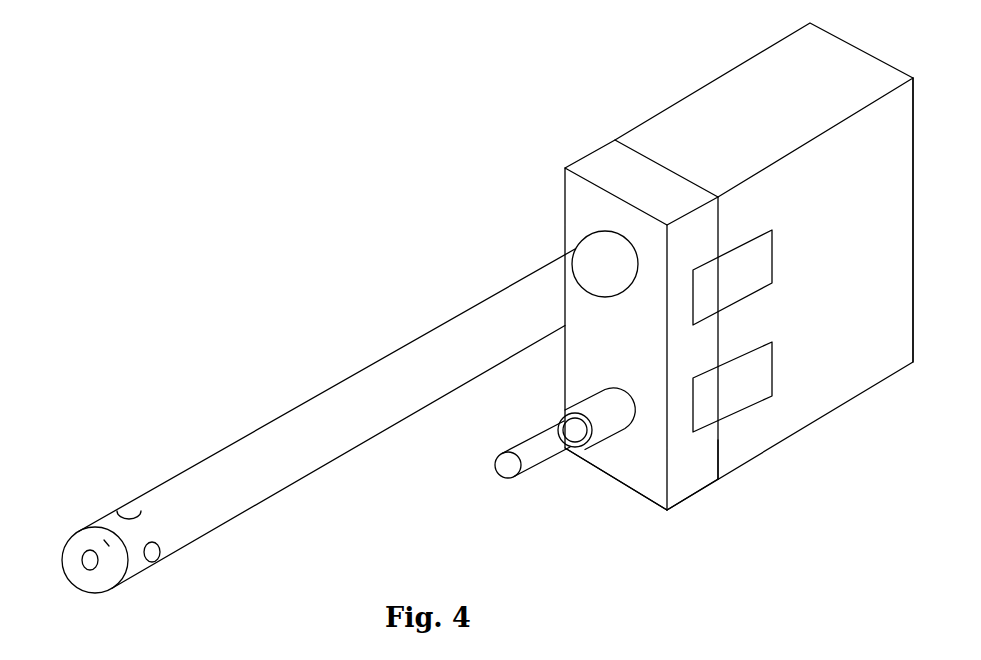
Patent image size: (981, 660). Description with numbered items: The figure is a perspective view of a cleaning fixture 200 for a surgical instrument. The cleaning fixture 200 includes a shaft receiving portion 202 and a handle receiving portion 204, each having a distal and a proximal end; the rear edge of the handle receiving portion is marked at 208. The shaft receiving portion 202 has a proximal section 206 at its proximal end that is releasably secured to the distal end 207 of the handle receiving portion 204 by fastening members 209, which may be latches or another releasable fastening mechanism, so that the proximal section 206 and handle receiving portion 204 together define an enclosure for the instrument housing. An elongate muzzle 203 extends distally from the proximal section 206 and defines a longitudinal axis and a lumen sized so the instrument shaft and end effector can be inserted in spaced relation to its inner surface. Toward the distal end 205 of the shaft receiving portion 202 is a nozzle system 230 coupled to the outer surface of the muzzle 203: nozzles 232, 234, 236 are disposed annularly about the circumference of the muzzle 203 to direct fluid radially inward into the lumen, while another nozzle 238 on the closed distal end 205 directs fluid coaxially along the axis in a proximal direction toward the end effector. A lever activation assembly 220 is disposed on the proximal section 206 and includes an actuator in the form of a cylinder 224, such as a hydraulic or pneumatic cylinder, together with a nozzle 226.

The cleaning fixture 200 is at (412, 198).
The shaft receiving portion 202 is at (581, 161).
The elongate muzzle 203 is at (325, 388).
The handle receiving portion 204 is at (668, 108).
The distal end 205 is at (103, 582).
The proximal section 206 is at (713, 482).
The distal end 207 is at (728, 467).
The rear edge 208 is at (903, 365).
The fastening members 209 is at (747, 285).
The lever activation assembly 220 is at (583, 487).
The cylinder 224 is at (538, 432).
The nozzle 226 is at (508, 478).
The nozzle system 230 is at (42, 539).
The nozzle 232 is at (125, 513).
The nozzle 234 is at (155, 557).
The nozzle 236 is at (100, 538).
The nozzle 238 is at (85, 563).